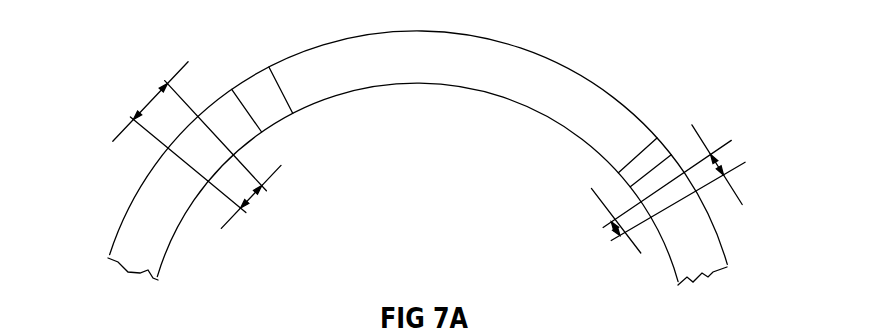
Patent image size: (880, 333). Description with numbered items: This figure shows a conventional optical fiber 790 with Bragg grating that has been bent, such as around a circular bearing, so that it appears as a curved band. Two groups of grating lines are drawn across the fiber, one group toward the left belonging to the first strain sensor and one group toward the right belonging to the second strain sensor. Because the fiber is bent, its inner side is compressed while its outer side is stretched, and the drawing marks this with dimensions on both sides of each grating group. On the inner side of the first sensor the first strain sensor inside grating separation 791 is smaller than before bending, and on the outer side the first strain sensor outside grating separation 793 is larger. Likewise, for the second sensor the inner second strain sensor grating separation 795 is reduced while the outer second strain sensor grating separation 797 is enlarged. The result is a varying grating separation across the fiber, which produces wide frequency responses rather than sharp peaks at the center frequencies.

The optical fiber with Bragg grating 790 is at (578, 74).
The first strain sensor inside grating separation DA−δ 791 is at (290, 223).
The first strain sensor outside grating separation DA+δ 793 is at (115, 82).
The second strain sensor grating separation DB−δ 795 is at (568, 233).
The second strain sensor grating separation DB+δ 797 is at (748, 143).